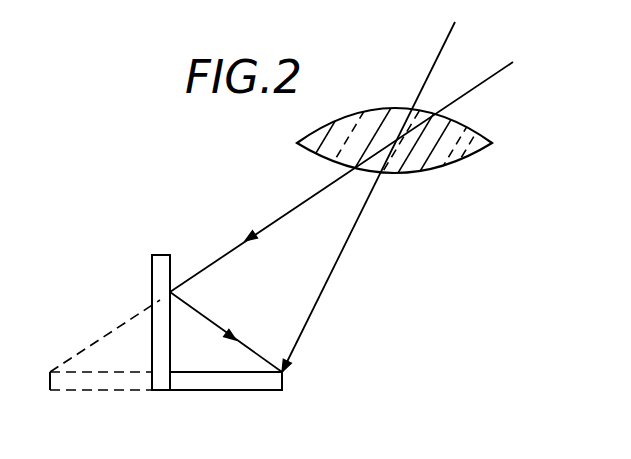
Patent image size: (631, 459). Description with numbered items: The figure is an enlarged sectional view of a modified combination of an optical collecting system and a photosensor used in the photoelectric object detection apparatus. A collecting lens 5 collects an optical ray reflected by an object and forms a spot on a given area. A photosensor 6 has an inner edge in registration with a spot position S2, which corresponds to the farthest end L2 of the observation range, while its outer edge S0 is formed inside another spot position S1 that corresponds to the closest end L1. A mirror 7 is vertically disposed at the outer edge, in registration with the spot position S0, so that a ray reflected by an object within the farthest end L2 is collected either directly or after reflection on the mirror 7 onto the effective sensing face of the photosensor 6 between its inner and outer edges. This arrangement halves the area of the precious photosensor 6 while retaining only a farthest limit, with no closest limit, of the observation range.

The collecting lens 5 is at (464, 160).
The photosensor 6 is at (282, 379).
The mirror 7 is at (155, 280).
The closest end of the observation range L1 is at (365, 165).
The farthest end of the observation range L2 is at (392, 188).
The outer edge spot position S0 is at (163, 413).
The spot position corresponding to the closest end S1 is at (94, 402).
The spot position corresponding to the farthest end S2 is at (288, 413).